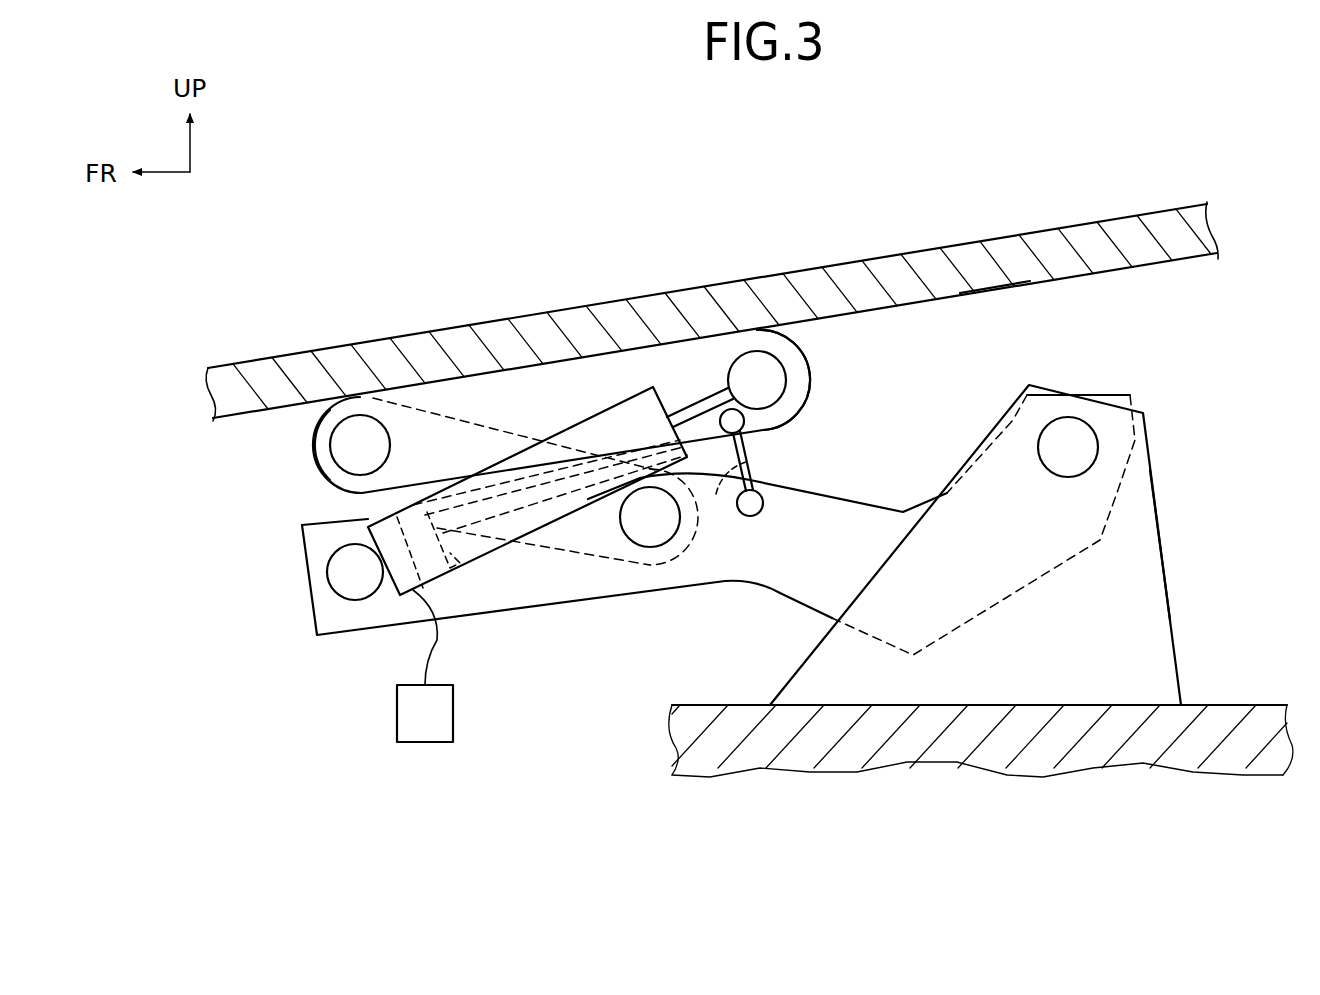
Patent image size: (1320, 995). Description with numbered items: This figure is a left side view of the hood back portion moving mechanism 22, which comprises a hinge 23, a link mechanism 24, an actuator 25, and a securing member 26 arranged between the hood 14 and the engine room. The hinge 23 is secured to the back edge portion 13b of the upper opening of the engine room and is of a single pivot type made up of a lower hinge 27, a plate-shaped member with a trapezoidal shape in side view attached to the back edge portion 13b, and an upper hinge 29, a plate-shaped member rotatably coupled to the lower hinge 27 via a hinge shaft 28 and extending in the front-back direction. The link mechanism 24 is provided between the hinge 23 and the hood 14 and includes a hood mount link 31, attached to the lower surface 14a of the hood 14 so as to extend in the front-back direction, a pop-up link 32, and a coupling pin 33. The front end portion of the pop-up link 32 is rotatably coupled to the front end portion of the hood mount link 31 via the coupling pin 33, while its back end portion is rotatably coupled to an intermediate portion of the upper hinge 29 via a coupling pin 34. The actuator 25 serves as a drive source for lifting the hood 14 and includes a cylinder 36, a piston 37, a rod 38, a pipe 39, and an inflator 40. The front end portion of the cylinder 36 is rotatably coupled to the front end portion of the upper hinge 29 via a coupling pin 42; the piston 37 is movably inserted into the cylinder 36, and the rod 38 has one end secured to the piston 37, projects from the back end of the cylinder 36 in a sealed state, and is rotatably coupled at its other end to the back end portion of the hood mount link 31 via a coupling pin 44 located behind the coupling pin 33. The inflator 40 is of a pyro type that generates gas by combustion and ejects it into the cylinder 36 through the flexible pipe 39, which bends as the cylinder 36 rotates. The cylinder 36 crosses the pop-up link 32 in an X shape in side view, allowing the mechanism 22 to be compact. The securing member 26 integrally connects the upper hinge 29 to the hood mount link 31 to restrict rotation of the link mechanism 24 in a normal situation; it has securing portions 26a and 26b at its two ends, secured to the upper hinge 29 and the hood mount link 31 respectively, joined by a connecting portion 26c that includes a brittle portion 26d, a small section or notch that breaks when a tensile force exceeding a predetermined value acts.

The back edge portion 13b is at (1222, 703).
The hood 14 is at (930, 246).
The lower surface 14a is at (995, 295).
The hood back portion moving mechanism 22 is at (1222, 337).
The hinge 23 is at (1163, 524).
The link mechanism 24 is at (306, 451).
The actuator 25 is at (597, 406).
The securing member 26 is at (798, 524).
The securing portion 26a is at (764, 500).
The securing portion 26b is at (745, 421).
The connecting portion 26c is at (745, 459).
The brittle portion 26d is at (730, 465).
The lower hinge 27 is at (1148, 597).
The hinge shaft 28 is at (1082, 441).
The upper hinge 29 is at (776, 586).
The hood mount link 31 is at (490, 395).
The pop-up link 32 is at (600, 565).
The coupling pin 33 is at (352, 462).
The coupling pin 34 is at (648, 542).
The cylinder 36 is at (507, 548).
The piston 37 is at (472, 565).
The rod 38 is at (692, 404).
The pipe 39 is at (428, 652).
The inflator 40 is at (424, 744).
The coupling pin 42 is at (345, 570).
The coupling pin 44 is at (770, 374).